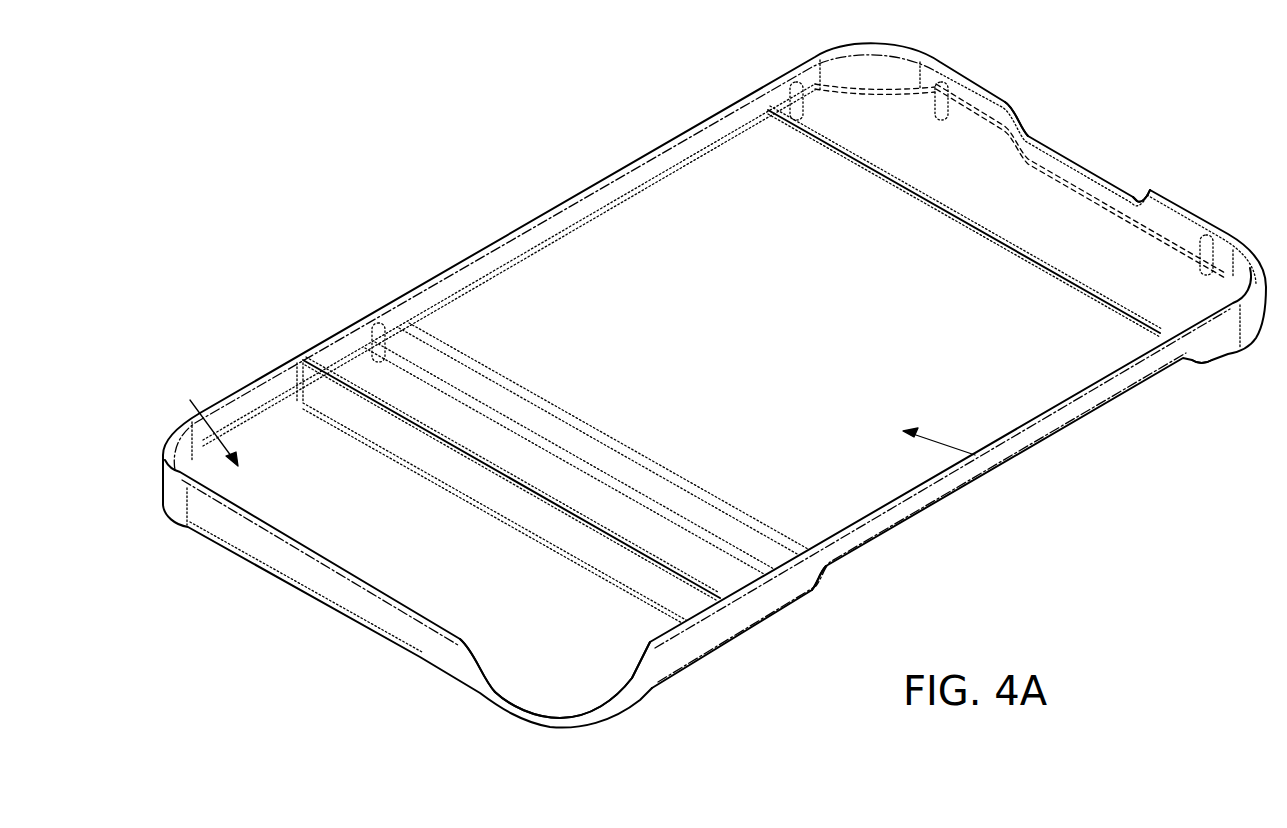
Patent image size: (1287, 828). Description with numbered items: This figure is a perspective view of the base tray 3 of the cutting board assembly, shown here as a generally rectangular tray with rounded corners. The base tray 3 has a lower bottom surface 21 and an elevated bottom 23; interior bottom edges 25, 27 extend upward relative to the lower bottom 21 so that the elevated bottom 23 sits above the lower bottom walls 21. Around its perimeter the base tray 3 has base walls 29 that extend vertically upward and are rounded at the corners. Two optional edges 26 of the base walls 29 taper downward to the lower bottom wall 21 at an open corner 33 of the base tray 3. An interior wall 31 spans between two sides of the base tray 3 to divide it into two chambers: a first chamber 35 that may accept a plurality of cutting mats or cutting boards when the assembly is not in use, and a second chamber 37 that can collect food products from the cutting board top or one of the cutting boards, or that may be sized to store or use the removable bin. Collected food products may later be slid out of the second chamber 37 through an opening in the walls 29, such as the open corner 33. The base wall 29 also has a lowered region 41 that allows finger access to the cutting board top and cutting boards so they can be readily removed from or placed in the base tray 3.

The base tray 3 is at (498, 242).
The lower bottom surface 21 is at (865, 96).
The elevated bottom 23 is at (646, 198).
The interior bottom edge 25 is at (948, 206).
The tapered edge 26 is at (480, 657).
The interior bottom edge 27 is at (563, 440).
The base wall 29 is at (714, 108).
The interior wall 31 is at (488, 498).
The open corner 33 is at (567, 708).
The first chamber 35 is at (975, 455).
The second chamber 37 is at (205, 440).
The lowered region 41 is at (714, 382).